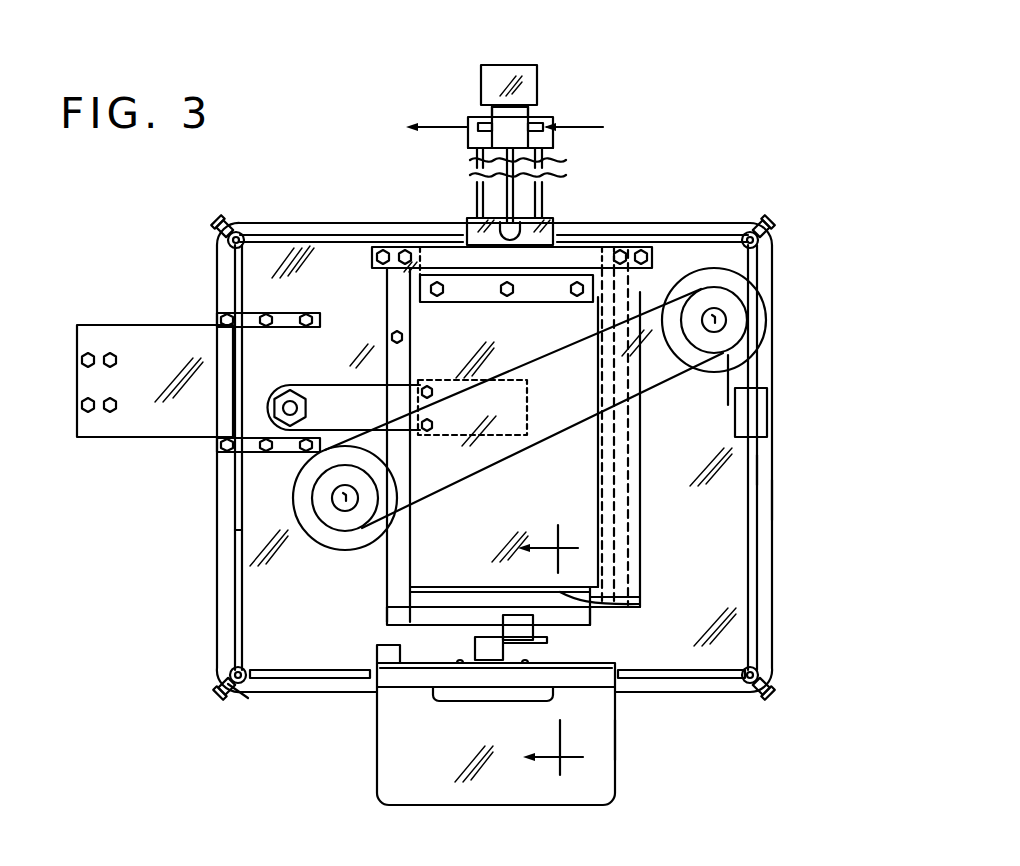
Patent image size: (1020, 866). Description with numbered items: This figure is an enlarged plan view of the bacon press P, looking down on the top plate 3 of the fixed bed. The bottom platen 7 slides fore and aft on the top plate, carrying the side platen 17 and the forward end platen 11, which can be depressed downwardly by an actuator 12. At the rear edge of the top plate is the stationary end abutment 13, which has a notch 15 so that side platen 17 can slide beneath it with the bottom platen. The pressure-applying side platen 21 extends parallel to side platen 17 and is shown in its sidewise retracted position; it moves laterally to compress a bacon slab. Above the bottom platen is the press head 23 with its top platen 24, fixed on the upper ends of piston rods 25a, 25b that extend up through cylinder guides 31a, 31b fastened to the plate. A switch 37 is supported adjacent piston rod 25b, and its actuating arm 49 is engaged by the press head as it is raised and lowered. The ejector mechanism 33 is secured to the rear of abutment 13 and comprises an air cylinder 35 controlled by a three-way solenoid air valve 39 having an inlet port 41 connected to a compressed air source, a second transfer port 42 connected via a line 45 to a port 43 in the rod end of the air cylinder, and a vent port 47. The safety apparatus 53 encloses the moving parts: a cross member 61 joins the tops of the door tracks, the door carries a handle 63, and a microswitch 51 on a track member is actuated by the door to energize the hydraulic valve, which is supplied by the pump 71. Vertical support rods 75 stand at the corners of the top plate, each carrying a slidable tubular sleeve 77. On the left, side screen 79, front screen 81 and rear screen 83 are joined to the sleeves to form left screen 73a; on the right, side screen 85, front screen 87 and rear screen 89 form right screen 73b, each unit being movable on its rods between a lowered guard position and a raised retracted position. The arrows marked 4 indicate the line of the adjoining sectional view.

The top plate 3 is at (772, 557).
The bacon press P is at (812, 500).
The side screen 85 is at (755, 470).
The left screen 73a is at (228, 609).
The right screen 73b is at (768, 618).
The side screen 79 is at (236, 548).
The rear screen 83 is at (364, 235).
The rear screen 89 is at (703, 235).
The front screen 81 is at (300, 669).
The front screen 87 is at (677, 682).
The vertical support rods 75 is at (243, 234).
The tubular sleeve 77 is at (223, 245).
The pump 71 is at (246, 690).
The pressure-applying side platen 21 is at (420, 334).
The stationary end abutment 13 is at (373, 250).
The notch 15 is at (617, 248).
The press head 23 is at (665, 290).
The bottom platen 7 is at (645, 442).
The side platen 17 is at (606, 519).
The top platen 24 is at (640, 604).
The forward end platen 11 is at (590, 612).
The actuator 12 is at (533, 633).
The microswitch 51 is at (384, 645).
The handle 63 is at (477, 700).
The safety apparatus 53 is at (372, 706).
The cross member 61 is at (574, 682).
The section line 4- 4 is at (550, 656).
The piston rod 25a is at (342, 498).
The piston rod 25b is at (720, 323).
The cylinder guide 31a is at (323, 548).
The cylinder guide 31b is at (716, 268).
The actuating arm 49 is at (718, 385).
The switch 37 is at (767, 418).
The ejector mechanism 33 is at (610, 99).
The three-way solenoid air valve 39 is at (537, 68).
The inlet port 41 is at (533, 115).
The vent port 47 is at (480, 126).
The second transfer port 42 is at (483, 158).
The line 45 is at (480, 195).
The air cylinder 35 is at (543, 188).
The port 43 is at (520, 230).